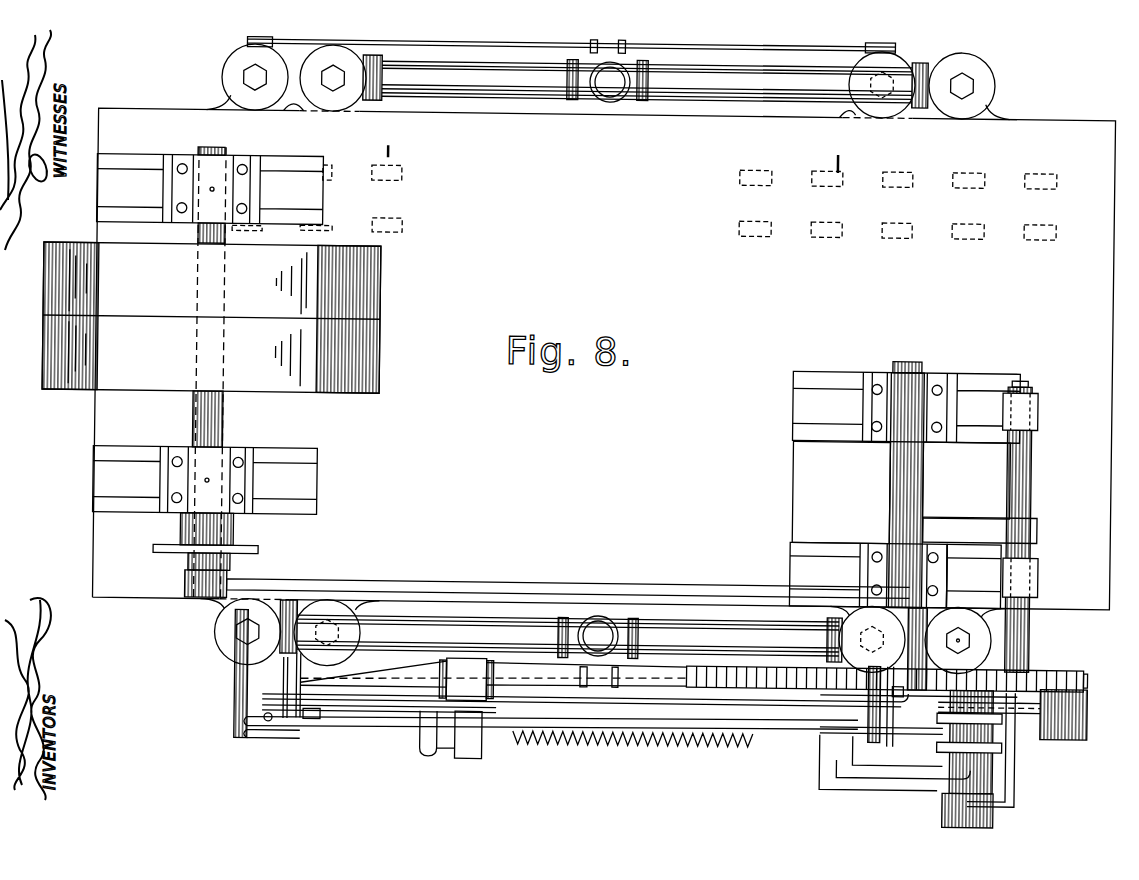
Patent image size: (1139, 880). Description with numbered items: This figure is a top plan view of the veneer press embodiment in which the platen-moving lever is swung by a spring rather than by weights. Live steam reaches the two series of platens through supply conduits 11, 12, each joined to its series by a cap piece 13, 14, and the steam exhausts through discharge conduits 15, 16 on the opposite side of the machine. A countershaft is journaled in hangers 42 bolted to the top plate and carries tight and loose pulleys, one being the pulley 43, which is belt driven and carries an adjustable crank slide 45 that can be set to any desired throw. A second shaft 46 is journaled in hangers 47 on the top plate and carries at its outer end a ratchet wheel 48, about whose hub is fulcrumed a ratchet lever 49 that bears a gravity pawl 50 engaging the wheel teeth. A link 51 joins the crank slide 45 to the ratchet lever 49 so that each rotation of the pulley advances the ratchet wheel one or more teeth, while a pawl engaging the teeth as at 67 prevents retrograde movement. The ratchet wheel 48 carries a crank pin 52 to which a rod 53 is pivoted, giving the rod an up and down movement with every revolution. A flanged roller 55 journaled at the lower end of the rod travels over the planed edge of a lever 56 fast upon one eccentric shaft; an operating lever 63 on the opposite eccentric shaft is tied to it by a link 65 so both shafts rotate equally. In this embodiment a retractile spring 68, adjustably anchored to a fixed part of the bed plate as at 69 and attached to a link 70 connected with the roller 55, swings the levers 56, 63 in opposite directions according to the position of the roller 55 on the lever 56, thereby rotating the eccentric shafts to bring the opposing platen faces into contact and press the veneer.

The live steam supply conduit 11 is at (601, 628).
The live steam supply conduit 12 is at (606, 90).
The cap piece 13 is at (225, 642).
The cap piece 14 is at (546, 92).
The discharge conduit 15 is at (717, 51).
The discharge conduit 16 is at (373, 676).
The hangers 42 is at (213, 330).
The pulley 43 is at (211, 317).
The crank slide 45 is at (232, 566).
The second shaft 46 is at (896, 482).
The hangers 47 is at (904, 484).
The ratchet wheel 48 is at (794, 688).
The ratchet lever 49 is at (924, 622).
The gravity pawl 50 is at (886, 682).
The link 51 is at (473, 587).
The crank pin 52 is at (1024, 714).
The rod 53 is at (1016, 744).
The flanged roller 55 is at (969, 759).
The lever 56 is at (904, 733).
The operating lever 63 is at (277, 742).
The link 65 is at (390, 730).
The pawl engagement point 67 is at (1033, 527).
The retractile spring 68 is at (648, 746).
The spring connection to bed plate 69 is at (435, 759).
The link 70 is at (893, 783).